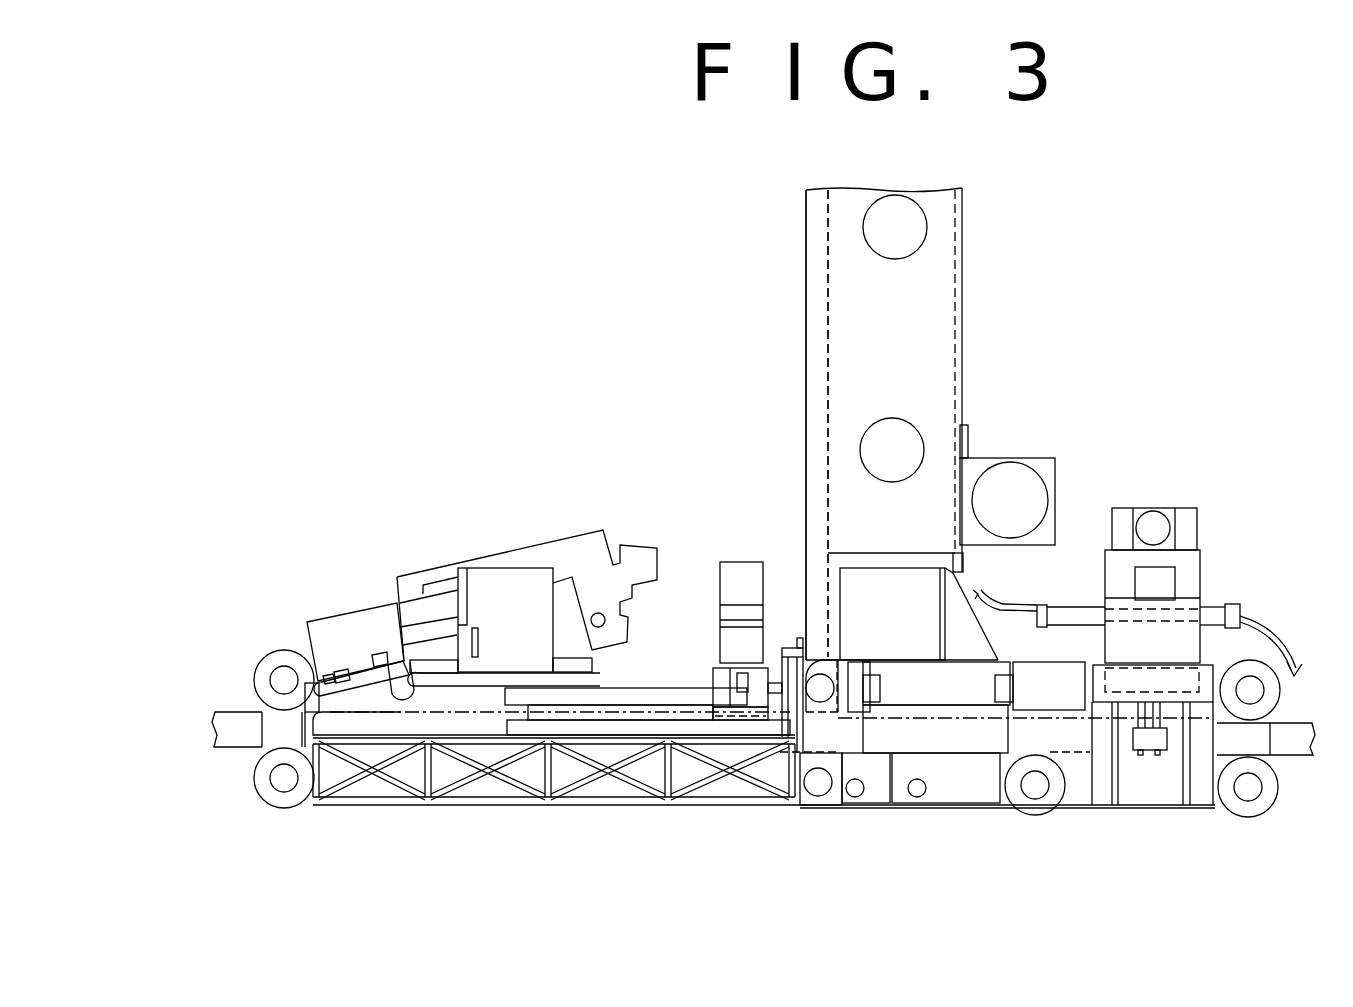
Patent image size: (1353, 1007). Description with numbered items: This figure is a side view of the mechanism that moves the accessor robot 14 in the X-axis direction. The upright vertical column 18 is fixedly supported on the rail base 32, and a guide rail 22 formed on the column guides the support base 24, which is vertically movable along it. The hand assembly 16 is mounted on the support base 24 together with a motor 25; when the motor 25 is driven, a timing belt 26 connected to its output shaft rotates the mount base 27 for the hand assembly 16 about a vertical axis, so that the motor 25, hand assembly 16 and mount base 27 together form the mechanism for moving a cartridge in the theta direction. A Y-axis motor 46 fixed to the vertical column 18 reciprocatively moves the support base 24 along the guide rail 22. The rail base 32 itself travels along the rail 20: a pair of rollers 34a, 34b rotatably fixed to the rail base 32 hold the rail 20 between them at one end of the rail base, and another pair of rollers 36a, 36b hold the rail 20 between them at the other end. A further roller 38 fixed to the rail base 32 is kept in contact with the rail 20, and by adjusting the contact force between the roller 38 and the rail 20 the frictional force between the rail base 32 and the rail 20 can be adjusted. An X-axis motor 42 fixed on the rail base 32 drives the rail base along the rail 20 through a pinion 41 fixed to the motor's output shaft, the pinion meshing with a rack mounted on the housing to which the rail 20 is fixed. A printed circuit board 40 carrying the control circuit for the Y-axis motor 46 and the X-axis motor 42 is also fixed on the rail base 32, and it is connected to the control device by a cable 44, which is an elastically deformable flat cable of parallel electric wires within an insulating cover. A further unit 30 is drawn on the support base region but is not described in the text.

The accessor robot 14 is at (712, 288).
The hand assembly 16 is at (563, 545).
The vertical column 18 is at (937, 300).
The rail 20 is at (237, 722).
The guide rail 22 is at (818, 310).
The support base 24 is at (642, 720).
The motor 25 is at (740, 570).
The timing belt 26 is at (670, 692).
The mount base 27 is at (392, 688).
The drive unit 30 is at (497, 592).
The rail base 32 is at (527, 806).
The roller 34a is at (265, 668).
The roller 34b is at (281, 810).
The roller 36a is at (1243, 663).
The roller 36b is at (1247, 814).
The roller 38 is at (1035, 815).
The printed circuit board 40 is at (1210, 610).
The pinion 41 is at (1148, 752).
The X-axis motor 42 is at (1183, 555).
The cable 44 is at (1277, 632).
The Y-axis motor 46 is at (1047, 460).